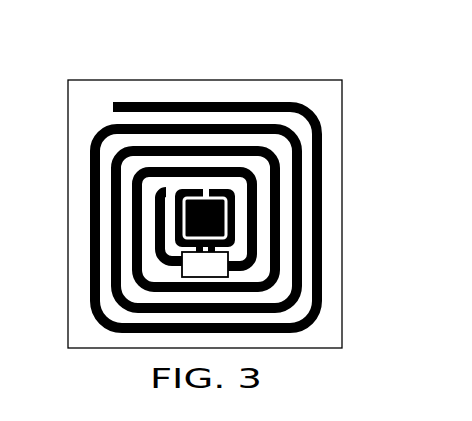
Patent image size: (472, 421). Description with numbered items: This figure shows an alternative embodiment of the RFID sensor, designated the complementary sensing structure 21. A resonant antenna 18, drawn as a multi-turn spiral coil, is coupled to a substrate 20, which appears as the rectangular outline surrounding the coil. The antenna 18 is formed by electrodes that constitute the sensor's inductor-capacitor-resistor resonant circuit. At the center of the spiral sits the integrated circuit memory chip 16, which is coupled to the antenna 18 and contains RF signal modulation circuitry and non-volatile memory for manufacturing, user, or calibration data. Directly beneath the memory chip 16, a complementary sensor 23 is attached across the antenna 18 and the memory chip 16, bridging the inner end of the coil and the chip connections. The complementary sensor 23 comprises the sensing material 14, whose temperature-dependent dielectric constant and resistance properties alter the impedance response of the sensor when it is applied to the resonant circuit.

The complementary sensing structure 21 is at (302, 33).
The substrate 20 is at (343, 293).
The antenna 18 is at (312, 127).
The memory chip 16 is at (220, 213).
The sensing material 14 is at (176, 256).
The complementary sensor 23 is at (172, 276).